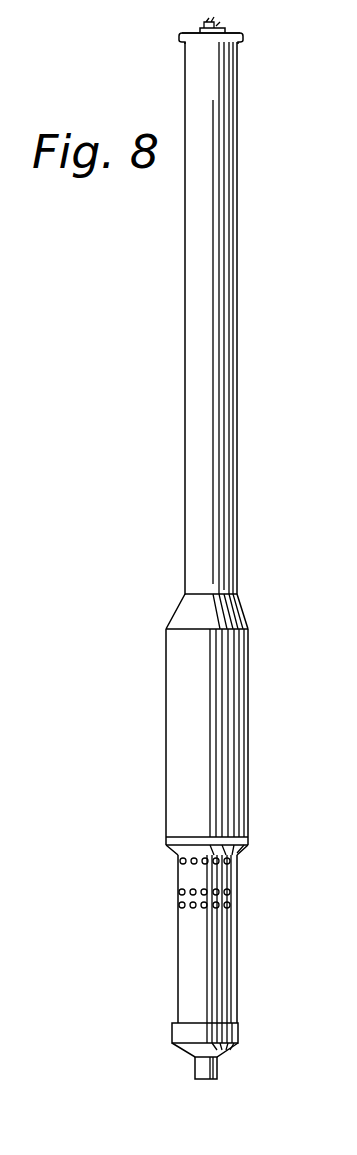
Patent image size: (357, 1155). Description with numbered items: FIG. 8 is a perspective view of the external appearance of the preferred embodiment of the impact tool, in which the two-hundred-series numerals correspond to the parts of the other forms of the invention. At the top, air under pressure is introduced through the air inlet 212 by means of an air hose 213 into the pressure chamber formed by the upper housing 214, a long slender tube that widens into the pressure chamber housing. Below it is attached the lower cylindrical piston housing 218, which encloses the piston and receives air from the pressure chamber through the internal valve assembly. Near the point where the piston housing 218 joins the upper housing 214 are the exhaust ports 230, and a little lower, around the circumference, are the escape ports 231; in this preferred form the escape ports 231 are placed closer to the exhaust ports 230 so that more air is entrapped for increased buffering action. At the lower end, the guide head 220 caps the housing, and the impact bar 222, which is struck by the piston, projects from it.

The air inlet 212 is at (225, 30).
The air hose 213 is at (200, 28).
The upper housing 214 is at (235, 403).
The piston housing 218 is at (236, 943).
The bottom cap 220 is at (238, 1036).
The impact bar 222 is at (195, 1070).
The exhaust ports 230 is at (232, 863).
The escape ports 231 is at (228, 898).